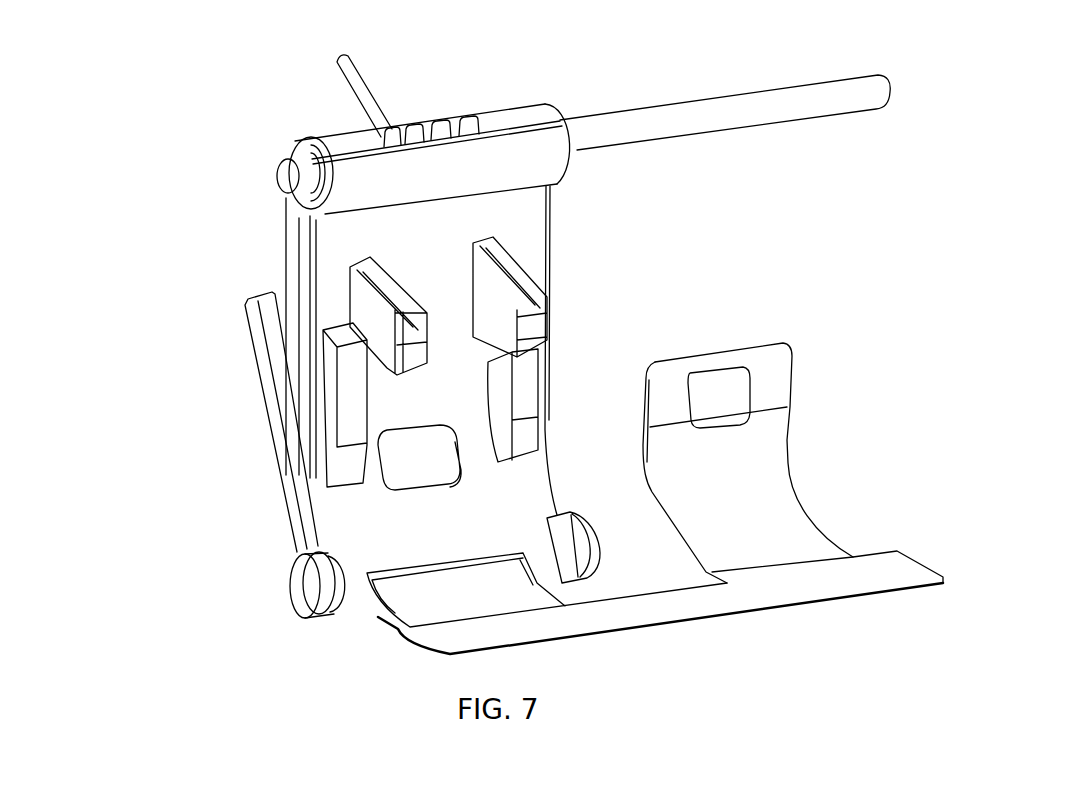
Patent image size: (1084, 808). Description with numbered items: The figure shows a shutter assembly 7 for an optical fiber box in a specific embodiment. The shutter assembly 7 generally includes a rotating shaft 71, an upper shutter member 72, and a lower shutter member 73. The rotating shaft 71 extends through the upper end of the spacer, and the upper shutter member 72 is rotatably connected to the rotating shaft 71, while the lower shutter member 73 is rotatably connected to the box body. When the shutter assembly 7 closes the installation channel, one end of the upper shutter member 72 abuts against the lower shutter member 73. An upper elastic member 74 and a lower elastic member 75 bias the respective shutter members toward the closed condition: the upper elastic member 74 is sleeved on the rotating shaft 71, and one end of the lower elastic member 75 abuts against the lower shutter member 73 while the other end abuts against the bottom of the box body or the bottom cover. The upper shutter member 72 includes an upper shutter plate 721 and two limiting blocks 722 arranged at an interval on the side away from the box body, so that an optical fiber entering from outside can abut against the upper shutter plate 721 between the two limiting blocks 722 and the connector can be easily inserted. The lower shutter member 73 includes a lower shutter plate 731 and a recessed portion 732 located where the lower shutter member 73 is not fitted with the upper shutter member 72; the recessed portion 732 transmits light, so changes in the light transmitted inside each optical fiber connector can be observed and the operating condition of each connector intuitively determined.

The shutter assembly 7 is at (102, 137).
The rotating shaft 71 is at (305, 175).
The upper shutter member 72 is at (173, 200).
The upper shutter plate 721 is at (347, 237).
The limiting blocks 722 is at (373, 320).
The lower shutter member 73 is at (160, 475).
The lower shutter plate 731 is at (363, 562).
The recessed portion 732 is at (443, 455).
The upper elastic member 74 is at (360, 85).
The lower elastic member 75 is at (380, 613).